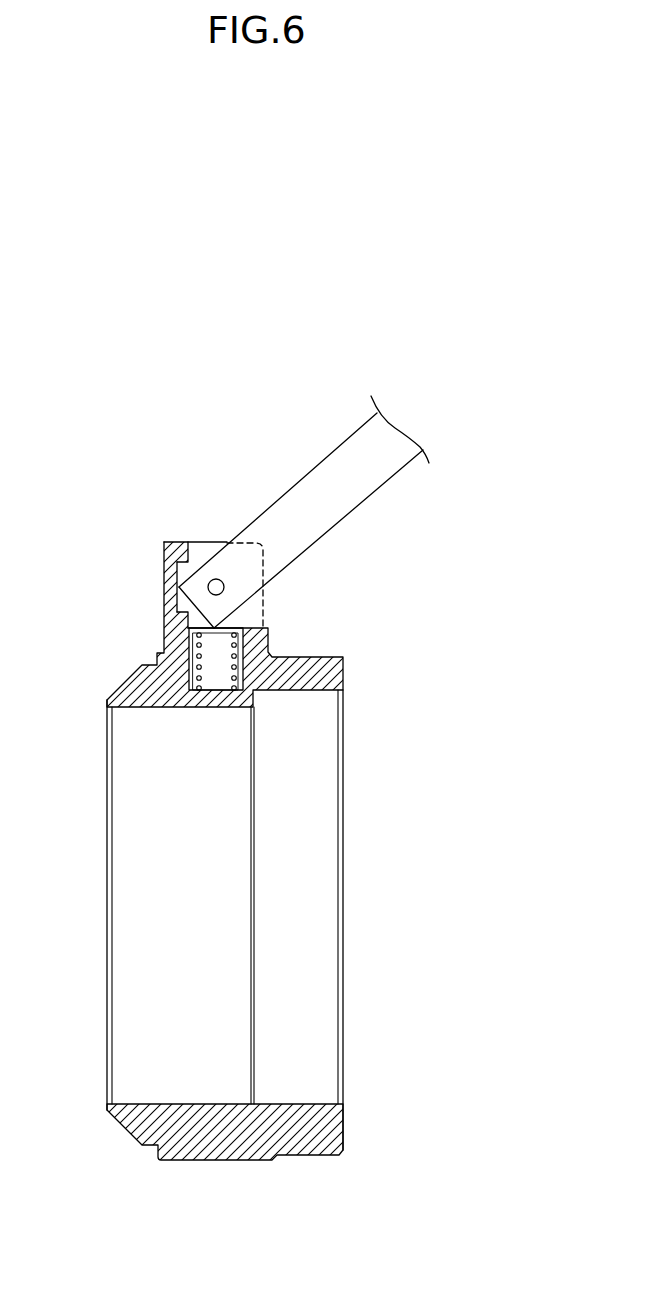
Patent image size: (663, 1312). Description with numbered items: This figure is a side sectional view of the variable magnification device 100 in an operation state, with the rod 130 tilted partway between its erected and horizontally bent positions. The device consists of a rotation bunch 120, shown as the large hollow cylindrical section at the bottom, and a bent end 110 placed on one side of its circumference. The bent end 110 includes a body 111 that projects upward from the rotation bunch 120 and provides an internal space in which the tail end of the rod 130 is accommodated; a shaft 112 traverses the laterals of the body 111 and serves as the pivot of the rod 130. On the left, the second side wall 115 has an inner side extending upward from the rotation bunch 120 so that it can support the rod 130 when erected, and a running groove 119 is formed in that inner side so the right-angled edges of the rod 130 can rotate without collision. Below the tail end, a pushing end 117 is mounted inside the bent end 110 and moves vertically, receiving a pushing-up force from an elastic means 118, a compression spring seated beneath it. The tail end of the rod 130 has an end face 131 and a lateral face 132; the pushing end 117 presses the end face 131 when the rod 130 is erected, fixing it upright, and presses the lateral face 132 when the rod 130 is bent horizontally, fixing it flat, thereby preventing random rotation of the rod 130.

The variable magnification device 100 is at (243, 350).
The bent end 110 is at (298, 598).
The body 111 is at (201, 522).
The shaft 112 is at (223, 583).
The second side wall 115 is at (163, 550).
The pushing end 117 is at (198, 635).
The elastic means 118 is at (198, 667).
The running groove 119 is at (177, 574).
The rotation bunch 120 is at (218, 1161).
The rod 130 is at (362, 495).
The end face 131 is at (177, 604).
The lateral face 132 is at (247, 600).